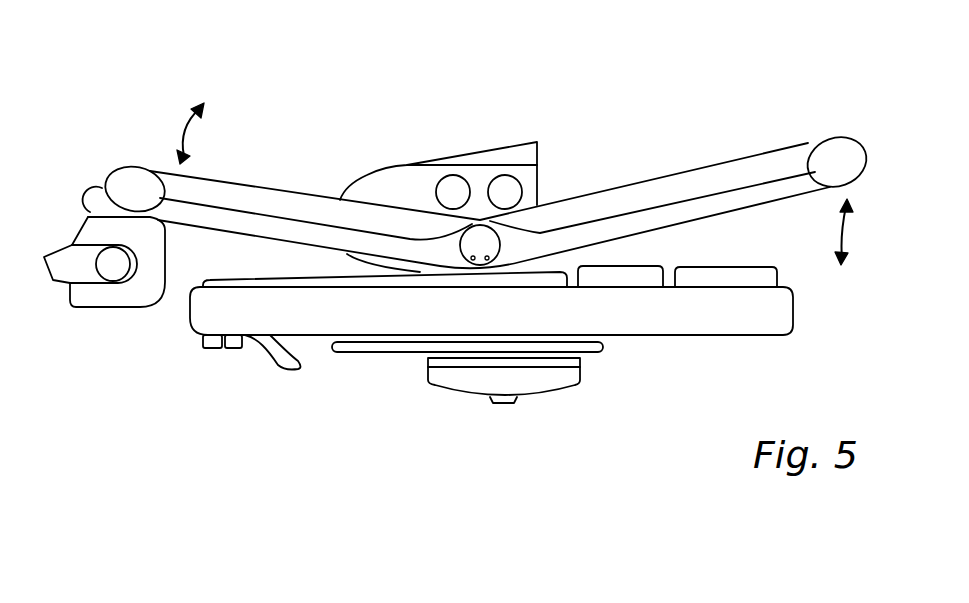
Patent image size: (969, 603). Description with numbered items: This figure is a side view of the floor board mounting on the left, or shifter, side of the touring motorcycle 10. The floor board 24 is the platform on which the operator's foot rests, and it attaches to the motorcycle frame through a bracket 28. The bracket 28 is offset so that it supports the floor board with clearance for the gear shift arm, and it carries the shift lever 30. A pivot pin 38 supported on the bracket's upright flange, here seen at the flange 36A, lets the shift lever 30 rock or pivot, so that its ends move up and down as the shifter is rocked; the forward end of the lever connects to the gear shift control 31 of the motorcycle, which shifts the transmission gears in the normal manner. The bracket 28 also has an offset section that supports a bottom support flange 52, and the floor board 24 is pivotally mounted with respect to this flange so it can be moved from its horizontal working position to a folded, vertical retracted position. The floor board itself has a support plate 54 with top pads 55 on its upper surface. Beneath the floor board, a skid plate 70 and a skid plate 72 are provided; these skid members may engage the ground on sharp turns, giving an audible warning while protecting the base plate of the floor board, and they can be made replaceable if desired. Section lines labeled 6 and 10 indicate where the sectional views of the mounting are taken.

The section line 6- 6 is at (488, 137).
The touring motorcycle 10 is at (438, 147).
The floor board 24 is at (635, 335).
The bracket 28 is at (528, 185).
The shift lever 30 is at (657, 193).
The gear shift control 31 is at (62, 273).
The clamp bracket 36A is at (98, 228).
The pivot pin 38 is at (487, 245).
The bottom support flange 52 is at (563, 377).
The support plate 54 is at (768, 314).
The top pads 55 is at (748, 275).
The skid plate 70 is at (360, 347).
The skid plate 72 is at (287, 370).